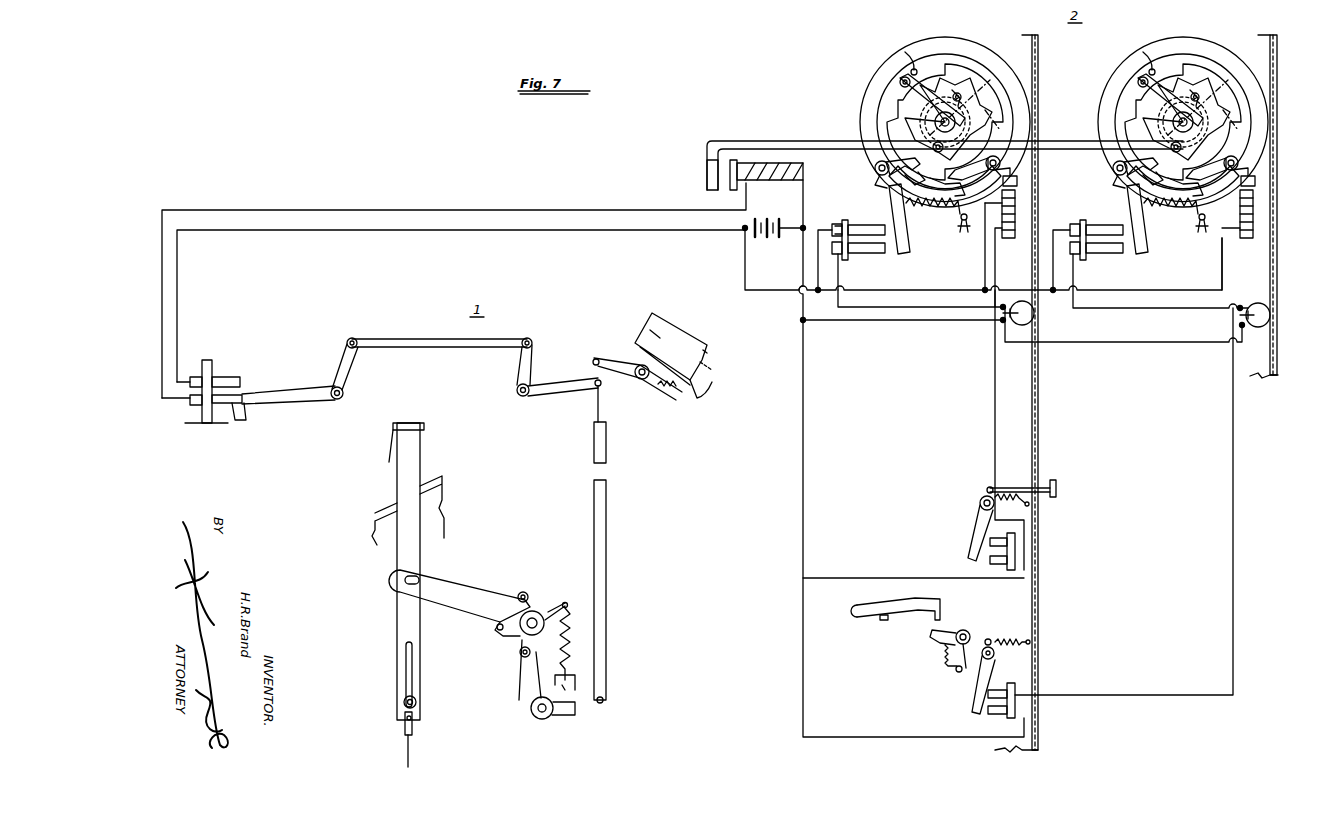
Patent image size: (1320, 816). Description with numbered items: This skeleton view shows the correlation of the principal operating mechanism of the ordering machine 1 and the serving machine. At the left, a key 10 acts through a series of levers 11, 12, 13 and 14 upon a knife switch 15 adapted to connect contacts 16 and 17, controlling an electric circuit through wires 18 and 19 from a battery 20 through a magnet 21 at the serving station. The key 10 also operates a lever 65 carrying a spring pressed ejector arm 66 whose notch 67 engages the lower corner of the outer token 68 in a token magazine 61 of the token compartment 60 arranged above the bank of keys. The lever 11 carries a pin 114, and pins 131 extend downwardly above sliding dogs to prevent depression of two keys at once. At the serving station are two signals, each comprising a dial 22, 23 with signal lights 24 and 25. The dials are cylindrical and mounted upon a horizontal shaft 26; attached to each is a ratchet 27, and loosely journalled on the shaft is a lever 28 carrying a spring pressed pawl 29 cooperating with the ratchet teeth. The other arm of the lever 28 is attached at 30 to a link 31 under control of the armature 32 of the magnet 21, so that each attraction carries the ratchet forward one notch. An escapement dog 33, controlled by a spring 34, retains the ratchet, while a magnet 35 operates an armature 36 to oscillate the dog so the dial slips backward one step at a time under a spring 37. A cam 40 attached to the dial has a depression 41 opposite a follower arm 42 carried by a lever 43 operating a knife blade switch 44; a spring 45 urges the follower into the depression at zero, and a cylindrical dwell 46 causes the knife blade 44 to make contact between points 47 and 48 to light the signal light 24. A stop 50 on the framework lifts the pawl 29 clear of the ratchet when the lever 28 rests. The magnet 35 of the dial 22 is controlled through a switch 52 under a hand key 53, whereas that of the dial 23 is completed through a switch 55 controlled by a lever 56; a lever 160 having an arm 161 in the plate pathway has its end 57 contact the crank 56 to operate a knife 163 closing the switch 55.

The ordering machine 1 is at (439, 367).
The key 10 is at (422, 426).
The lever 11 is at (462, 595).
The lever 12 is at (520, 691).
The lever 13 is at (558, 394).
The lever 14 is at (302, 399).
The knife switch 15 is at (240, 413).
The contact 16 is at (238, 378).
The contact 17 is at (248, 396).
The wire 18 is at (278, 231).
The wire 19 is at (323, 208).
The battery 20 is at (768, 250).
The magnet 21 is at (803, 170).
The dial 22 is at (1036, 130).
The dial 23 is at (1277, 125).
The signal light 24 is at (1034, 315).
The signal light 25 is at (1270, 314).
The horizontal shaft 26 is at (958, 118).
The ratchet 27 is at (962, 84).
The lever 28 is at (1067, 111).
The spring pressed pawl 29 is at (900, 93).
The attachment point 30 is at (1061, 156).
The link 31 is at (945, 164).
The armature 32 is at (706, 172).
The escapement dog 33 is at (1093, 174).
The spring 34 is at (1064, 184).
The magnet 35 is at (1009, 240).
The armature 36 is at (1018, 182).
The spring 37 is at (1084, 106).
The cam 40 is at (887, 128).
The depression 41 is at (1016, 163).
The follower arm 42 is at (1054, 185).
The lever 43 is at (880, 180).
The knife blade switch 44 is at (900, 232).
The spring 45 is at (1055, 215).
The cylindrical dwell 46 is at (878, 107).
The contact point 47 is at (865, 252).
The contact point 48 is at (870, 217).
The stop 50 is at (905, 52).
The switch 52 is at (976, 533).
The key 53 is at (1057, 490).
The switch 55 is at (1000, 685).
The lever 56 is at (984, 640).
The arm 57 is at (932, 618).
The token compartment 60 is at (683, 313).
The token magazine 61 is at (650, 330).
The lever 65 is at (628, 380).
The ejector arm 66 is at (695, 395).
The notch 67 is at (713, 370).
The token 68 is at (708, 352).
The pin 114 is at (528, 598).
The pin 131 is at (412, 754).
The lever 160 is at (886, 600).
The arm 161 is at (884, 621).
The knife 163 is at (972, 700).